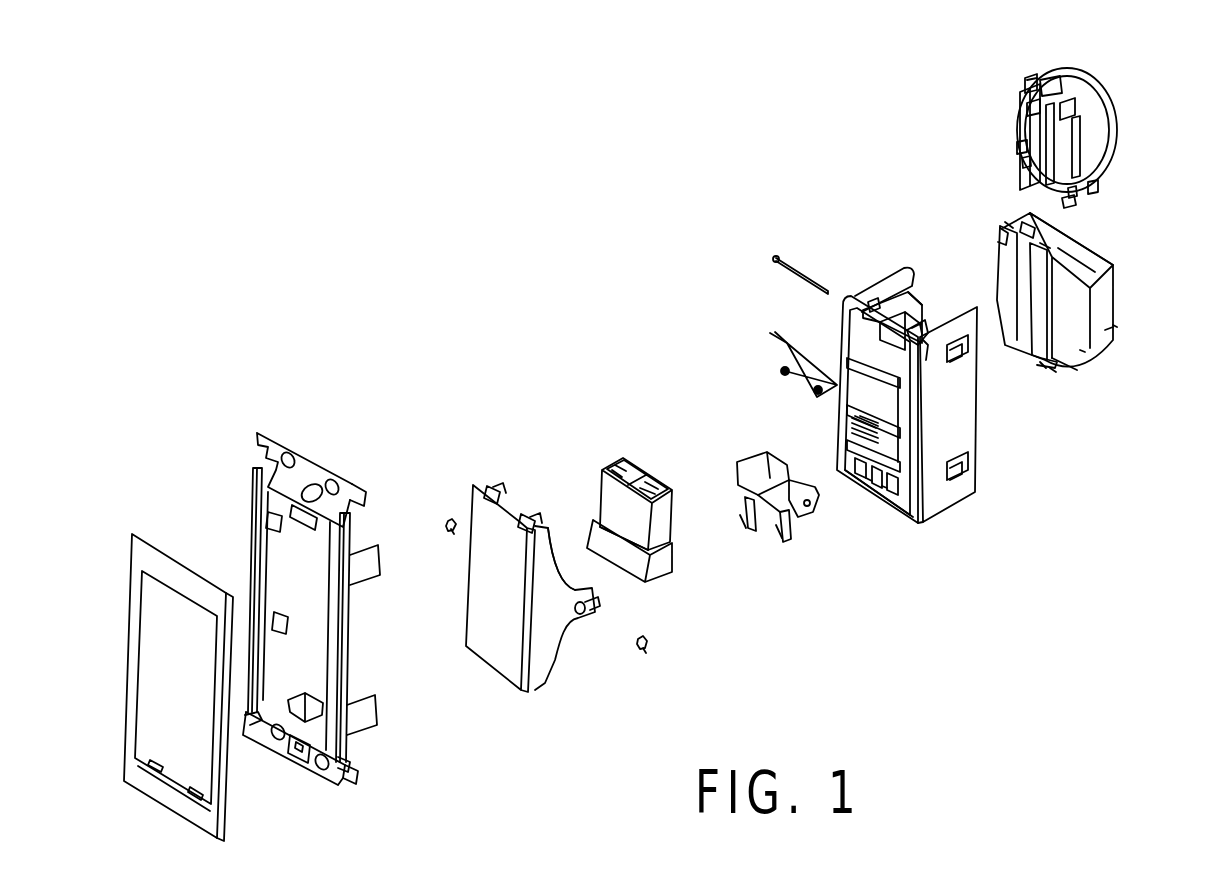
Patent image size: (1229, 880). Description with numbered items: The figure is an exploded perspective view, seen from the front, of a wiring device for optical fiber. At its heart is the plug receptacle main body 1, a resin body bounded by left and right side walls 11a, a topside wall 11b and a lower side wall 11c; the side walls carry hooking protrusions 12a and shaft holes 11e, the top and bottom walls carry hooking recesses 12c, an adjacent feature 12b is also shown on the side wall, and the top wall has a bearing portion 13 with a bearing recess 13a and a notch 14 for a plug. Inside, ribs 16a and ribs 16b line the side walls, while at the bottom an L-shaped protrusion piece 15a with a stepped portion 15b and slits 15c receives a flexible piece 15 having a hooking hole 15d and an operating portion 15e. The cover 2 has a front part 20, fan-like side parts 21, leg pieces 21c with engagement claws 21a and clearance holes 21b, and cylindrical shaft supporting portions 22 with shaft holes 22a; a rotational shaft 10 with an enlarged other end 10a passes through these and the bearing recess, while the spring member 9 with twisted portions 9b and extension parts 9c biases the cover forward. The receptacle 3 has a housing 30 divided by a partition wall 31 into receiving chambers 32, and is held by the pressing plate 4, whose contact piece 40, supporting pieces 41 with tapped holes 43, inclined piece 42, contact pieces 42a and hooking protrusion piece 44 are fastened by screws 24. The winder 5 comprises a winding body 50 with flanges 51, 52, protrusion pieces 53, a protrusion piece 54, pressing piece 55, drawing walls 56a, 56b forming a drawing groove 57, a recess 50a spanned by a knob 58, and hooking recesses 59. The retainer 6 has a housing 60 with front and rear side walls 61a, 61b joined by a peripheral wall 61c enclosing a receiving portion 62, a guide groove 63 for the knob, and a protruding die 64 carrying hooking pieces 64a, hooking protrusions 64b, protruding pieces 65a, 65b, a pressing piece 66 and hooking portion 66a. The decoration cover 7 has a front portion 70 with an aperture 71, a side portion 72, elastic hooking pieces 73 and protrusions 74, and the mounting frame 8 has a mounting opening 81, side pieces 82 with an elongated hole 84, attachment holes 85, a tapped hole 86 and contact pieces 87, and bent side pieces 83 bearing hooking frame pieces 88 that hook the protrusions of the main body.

The plug receptacle main body 1 is at (910, 433).
The cover 2 is at (550, 584).
The receptacle 3 is at (654, 528).
The pressing plate 4 is at (770, 508).
The winder 5 is at (1031, 141).
The retainer 6 is at (1062, 323).
The decoration cover 7 is at (197, 669).
The mounting frame 8 is at (316, 609).
The spring member 9 is at (768, 382).
The twisted portion 9b is at (818, 390).
The extension part 9c is at (787, 343).
The rotational shaft 10 is at (771, 254).
The other end 10a is at (790, 237).
The side wall 11a is at (860, 407).
The topside wall 11b is at (900, 270).
The lower side wall 11c is at (927, 530).
The shaft hole 11e is at (921, 348).
The hooking protrusion 12a is at (960, 360).
The catch opening 12b is at (968, 353).
The hooking recess 12c is at (874, 300).
The bearing portion 13 is at (888, 281).
The bearing recess 13a is at (920, 323).
The notch 14 is at (917, 297).
The flexible piece 15 is at (915, 556).
The protrusion piece 15a is at (860, 475).
The stepped portion 15b is at (900, 520).
The slit 15c is at (874, 486).
The hooking hole 15d is at (878, 513).
The operating portion 15e is at (890, 513).
The rib 16a is at (850, 358).
The rib 16b is at (848, 455).
The front part 20 is at (513, 667).
The side part 21 is at (598, 610).
The engagement claw 21a is at (598, 605).
The clearance hole 21b is at (584, 616).
The leg piece 21c is at (577, 585).
The shaft supporting portion 22 is at (478, 487).
The shaft hole 22a is at (494, 488).
The screw 24 is at (448, 523).
The housing 30 is at (675, 567).
The partition wall 31 is at (640, 470).
The receiving chamber 32 is at (622, 462).
The contact piece 40 is at (753, 462).
The supporting piece 41 is at (767, 455).
The inclined piece 42 is at (765, 517).
The contact piece 42a is at (745, 520).
The tapped hole 43 is at (805, 507).
The hooking protrusion piece 44 is at (778, 518).
The winding body 50 is at (1093, 148).
The recess 50a is at (1023, 128).
The flange 51 is at (1108, 127).
The flange 52 is at (1068, 200).
The protrusion piece 53 is at (1018, 147).
The protrusion piece 54 is at (1027, 115).
The pressing piece 55 is at (1023, 95).
The drawing wall 56a is at (1062, 108).
The drawing wall 56b is at (1027, 82).
The drawing groove 57 is at (1050, 93).
The knob 58 is at (1045, 160).
The hooking recess 59 is at (1022, 155).
The housing 60 is at (1113, 302).
The front side wall 61a is at (1077, 340).
The rear side wall 61b is at (1117, 268).
The peripheral wall 61c is at (1013, 228).
The receiving portion 62 is at (1093, 265).
The guide groove 63 is at (1045, 252).
The protruding die 64 is at (1028, 320).
The hooking piece 64a is at (1005, 300).
The hooking protrusion 64b is at (1053, 370).
The protruding piece 65a is at (1020, 320).
The protruding piece 65b is at (1082, 353).
The pressing piece 66 is at (1000, 255).
The hooking portion 66a is at (1108, 327).
The front portion 70 is at (158, 790).
The aperture 71 is at (200, 777).
The side portion 72 is at (185, 565).
The elastic hooking piece 73 is at (196, 788).
The protrusion 74 is at (222, 827).
The mounting opening 81 is at (323, 623).
The side piece 82 is at (290, 456).
The side piece 83 is at (265, 605).
The elongated hole 84 is at (336, 482).
The attachment hole 85 is at (266, 458).
The tapped hole 86 is at (313, 489).
The contact piece 87 is at (310, 522).
The hooking frame piece 88 is at (278, 528).